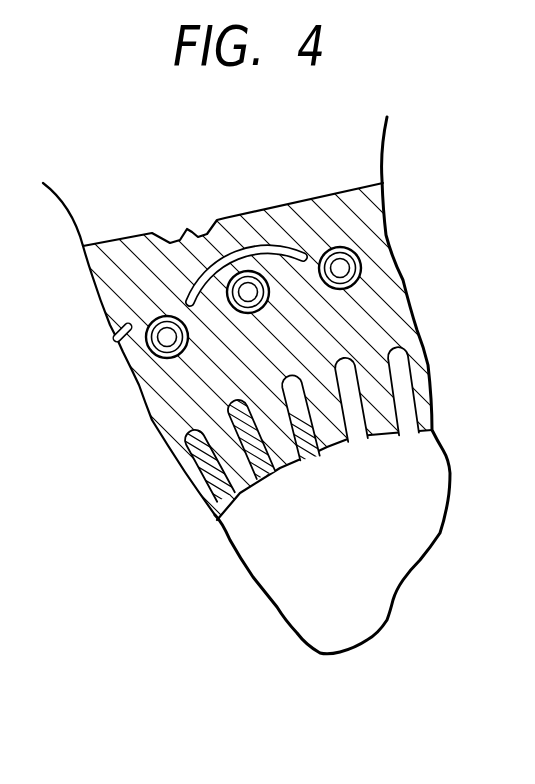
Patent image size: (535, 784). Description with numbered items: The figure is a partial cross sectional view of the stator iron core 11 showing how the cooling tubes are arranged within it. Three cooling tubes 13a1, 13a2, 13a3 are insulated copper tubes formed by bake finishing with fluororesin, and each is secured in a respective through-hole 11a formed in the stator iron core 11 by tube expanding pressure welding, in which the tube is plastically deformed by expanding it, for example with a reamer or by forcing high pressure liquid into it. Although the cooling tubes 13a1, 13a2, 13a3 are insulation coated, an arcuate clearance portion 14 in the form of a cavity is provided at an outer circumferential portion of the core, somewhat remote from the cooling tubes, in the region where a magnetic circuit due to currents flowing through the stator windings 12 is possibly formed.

The stator iron core 11 is at (272, 230).
The through-holes 11a is at (345, 262).
The stator windings 12 is at (362, 432).
The cooling tube 13a1 is at (337, 247).
The cooling tube 13a2 is at (250, 271).
The cooling tube 13a3 is at (170, 316).
The arcuate clearance portion 14 is at (215, 272).